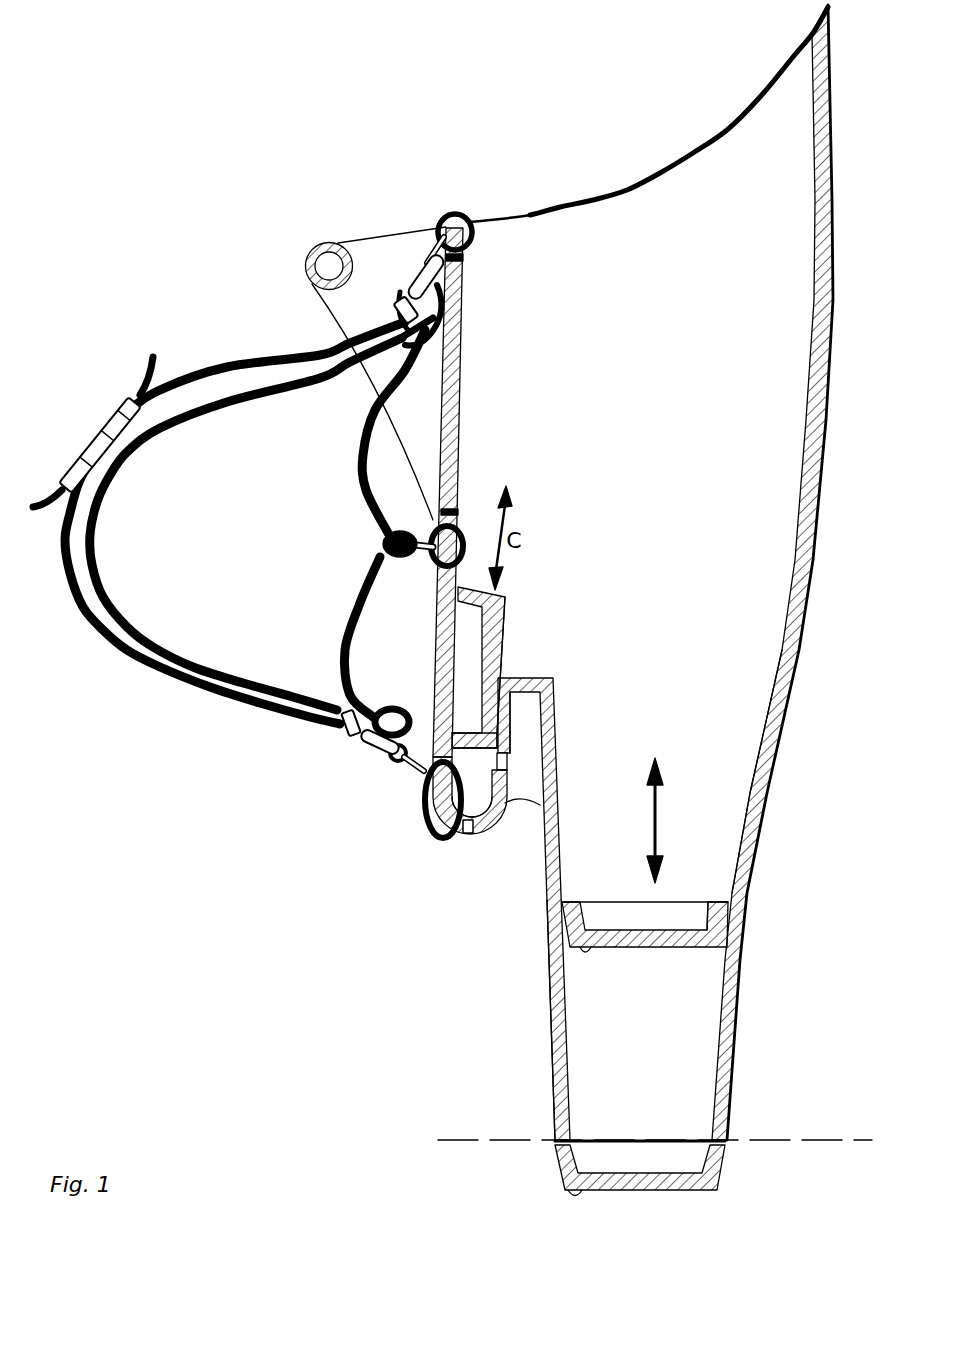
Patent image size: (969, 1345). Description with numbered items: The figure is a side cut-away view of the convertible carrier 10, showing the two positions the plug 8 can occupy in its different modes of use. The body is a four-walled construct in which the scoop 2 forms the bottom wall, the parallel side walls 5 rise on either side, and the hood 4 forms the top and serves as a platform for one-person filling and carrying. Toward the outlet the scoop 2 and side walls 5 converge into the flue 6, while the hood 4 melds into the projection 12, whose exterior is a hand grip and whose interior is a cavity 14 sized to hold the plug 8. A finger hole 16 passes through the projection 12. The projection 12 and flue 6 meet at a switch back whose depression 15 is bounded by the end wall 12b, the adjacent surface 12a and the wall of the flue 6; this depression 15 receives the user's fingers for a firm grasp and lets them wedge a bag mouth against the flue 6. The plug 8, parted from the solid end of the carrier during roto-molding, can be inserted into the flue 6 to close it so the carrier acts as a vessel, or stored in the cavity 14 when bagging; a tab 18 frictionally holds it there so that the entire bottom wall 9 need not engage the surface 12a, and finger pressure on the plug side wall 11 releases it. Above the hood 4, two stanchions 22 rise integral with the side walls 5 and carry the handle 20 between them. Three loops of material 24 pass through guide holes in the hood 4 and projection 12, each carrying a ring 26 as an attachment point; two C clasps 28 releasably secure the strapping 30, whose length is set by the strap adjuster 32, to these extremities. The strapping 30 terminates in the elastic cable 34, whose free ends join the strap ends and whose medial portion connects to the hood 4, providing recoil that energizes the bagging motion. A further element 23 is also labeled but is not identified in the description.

The scoop 2 is at (831, 204).
The hood 4 is at (465, 333).
The side walls 5 is at (718, 371).
The flue 6 is at (763, 800).
The plug 8 is at (505, 600).
The bottom wall 9 is at (501, 645).
The convertible carrier 10 is at (222, 122).
The plug side wall 11 is at (507, 806).
The projection 12 is at (486, 815).
The surface 12a is at (511, 742).
The end wall 12b is at (541, 680).
The cavity 14 is at (473, 800).
The depression 15 is at (527, 735).
The finger hole 16 is at (503, 768).
The tab 18 is at (555, 1010).
The handle 20 is at (316, 256).
The stanchions 22 is at (385, 256).
The attachment eye 23 is at (468, 250).
The loops of material 24 is at (461, 222).
The ring 26 is at (463, 292).
The C clasps 28 is at (400, 305).
The strapping 30 is at (101, 640).
The strap adjuster 32 is at (90, 437).
The elastic cable 34 is at (361, 462).